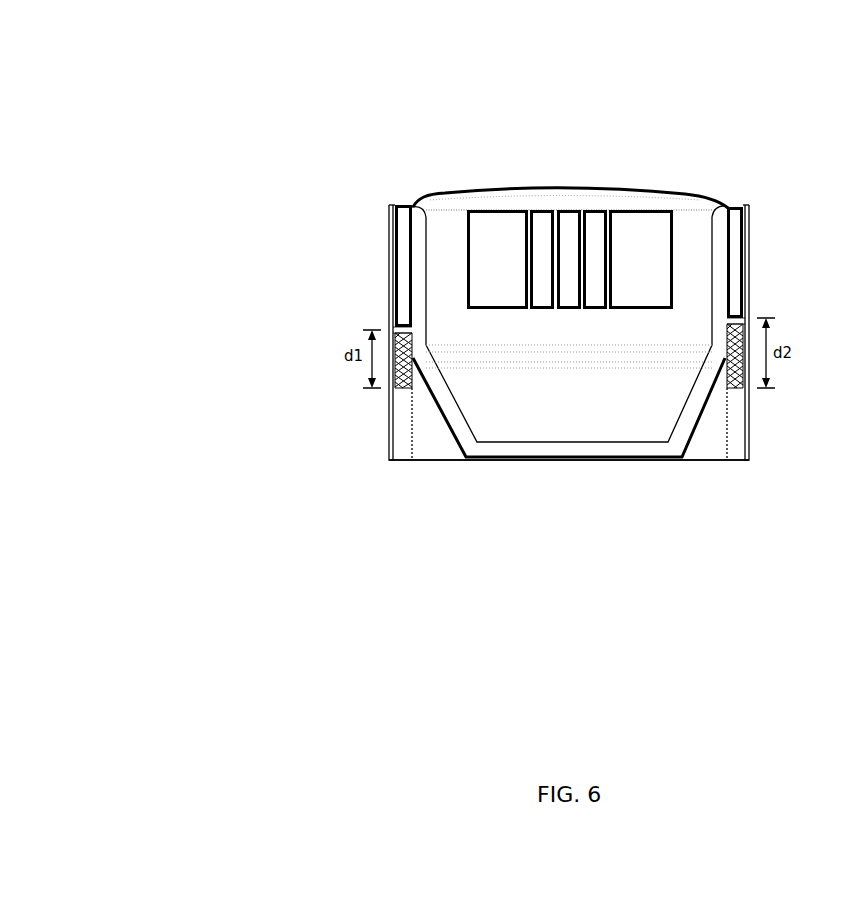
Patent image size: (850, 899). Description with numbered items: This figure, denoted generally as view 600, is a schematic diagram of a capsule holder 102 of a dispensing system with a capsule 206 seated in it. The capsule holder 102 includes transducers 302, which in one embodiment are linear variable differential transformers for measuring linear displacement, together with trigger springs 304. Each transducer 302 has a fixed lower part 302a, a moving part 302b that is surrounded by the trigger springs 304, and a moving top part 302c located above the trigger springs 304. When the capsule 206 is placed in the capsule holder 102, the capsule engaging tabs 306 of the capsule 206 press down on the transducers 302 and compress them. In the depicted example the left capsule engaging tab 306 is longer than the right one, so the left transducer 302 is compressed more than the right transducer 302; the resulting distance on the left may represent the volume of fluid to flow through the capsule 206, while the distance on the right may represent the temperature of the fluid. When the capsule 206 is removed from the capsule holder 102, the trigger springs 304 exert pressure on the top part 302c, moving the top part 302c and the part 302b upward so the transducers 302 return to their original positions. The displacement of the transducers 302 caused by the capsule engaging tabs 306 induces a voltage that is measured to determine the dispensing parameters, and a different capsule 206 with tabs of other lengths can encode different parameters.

The cross-sectional view of electronic device 600 is at (130, 35).
The capsule holder 102 is at (692, 460).
The capsule 206 is at (597, 190).
The transducer 302 is at (400, 453).
The lower part 302a is at (742, 415).
The part surrounded by trigger springs 302b is at (752, 337).
The top part 302c is at (752, 314).
The trigger spring 304 is at (428, 380).
The capsule engaging tab 306 is at (389, 252).